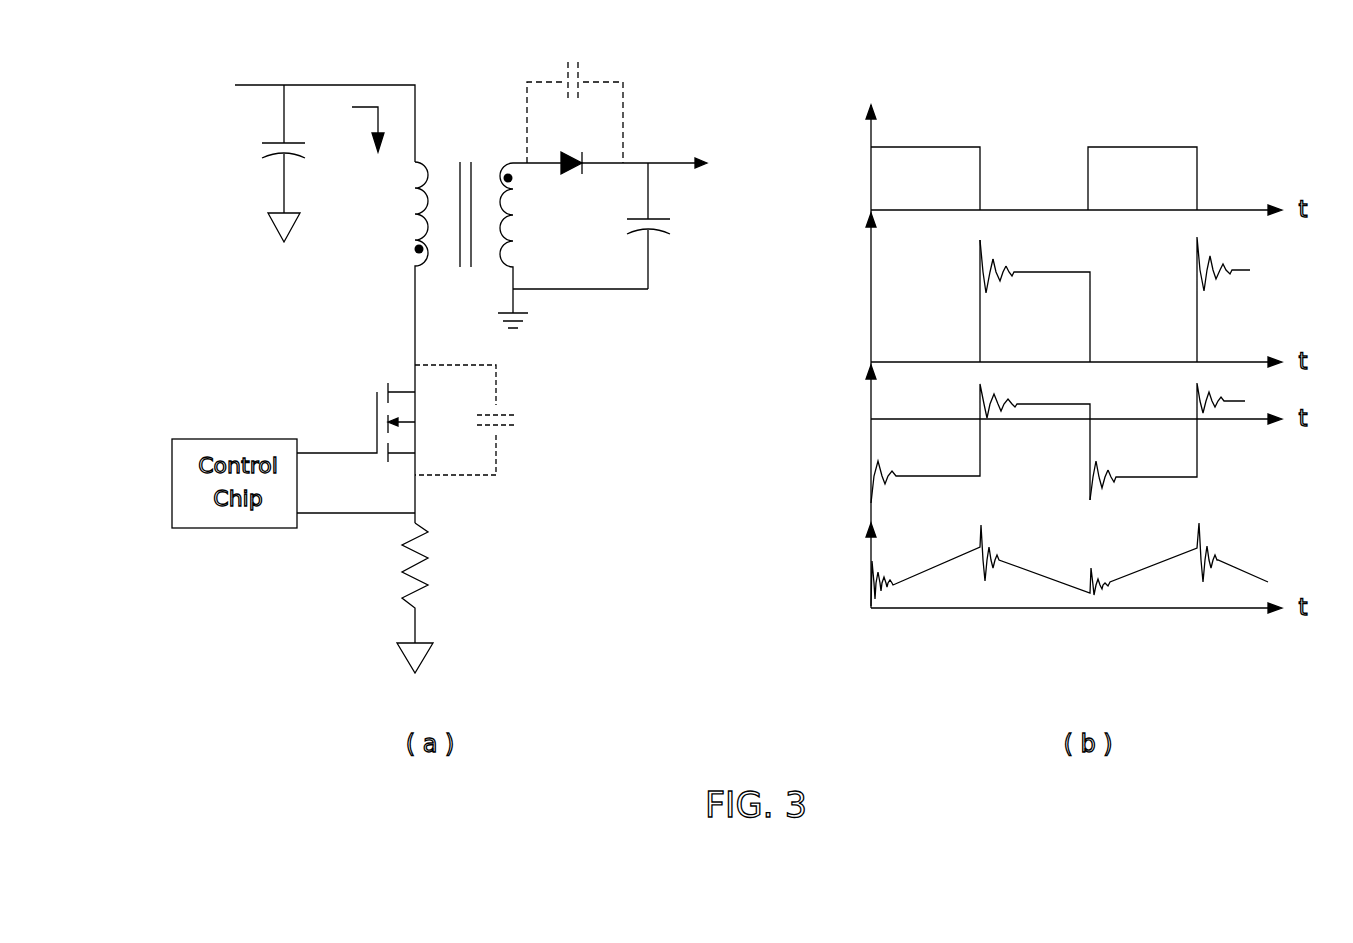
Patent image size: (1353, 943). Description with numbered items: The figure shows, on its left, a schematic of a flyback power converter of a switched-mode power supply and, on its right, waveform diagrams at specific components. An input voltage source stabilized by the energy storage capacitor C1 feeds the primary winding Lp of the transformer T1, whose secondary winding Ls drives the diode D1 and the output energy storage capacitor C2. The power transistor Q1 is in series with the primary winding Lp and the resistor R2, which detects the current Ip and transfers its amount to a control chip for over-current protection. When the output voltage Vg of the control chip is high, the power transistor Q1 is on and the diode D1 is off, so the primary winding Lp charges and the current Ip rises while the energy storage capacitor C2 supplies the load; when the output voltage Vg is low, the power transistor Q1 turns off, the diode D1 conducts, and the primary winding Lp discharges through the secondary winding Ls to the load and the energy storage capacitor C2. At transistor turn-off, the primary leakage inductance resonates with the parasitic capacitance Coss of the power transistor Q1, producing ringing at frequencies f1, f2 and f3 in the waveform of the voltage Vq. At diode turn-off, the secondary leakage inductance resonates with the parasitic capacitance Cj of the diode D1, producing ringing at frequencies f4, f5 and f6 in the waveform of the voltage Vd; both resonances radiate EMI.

The energy storage capacitor C1 is at (265, 163).
The current Ip is at (803, 356).
The primary winding Lp is at (409, 342).
The transformer T1 is at (467, 196).
The secondary winding Ls is at (573, 245).
The parasitic capacitance of the diode Cj is at (575, 96).
The voltage Vd is at (890, 323).
The diode D1 is at (575, 179).
The energy storage capacitor C2 is at (666, 226).
The power transistor Q1 is at (356, 409).
The voltage Vq is at (834, 349).
The parasitic capacitance of the power transistor Coss is at (497, 420).
The output voltage of the control chip Vg is at (764, 323).
The resistor R2 is at (399, 598).
The frequency f1 is at (974, 257).
The frequency f2 is at (1000, 251).
The frequency f3 is at (1022, 259).
The frequency f4 is at (1092, 496).
The frequency f5 is at (1114, 492).
The frequency f6 is at (1121, 463).